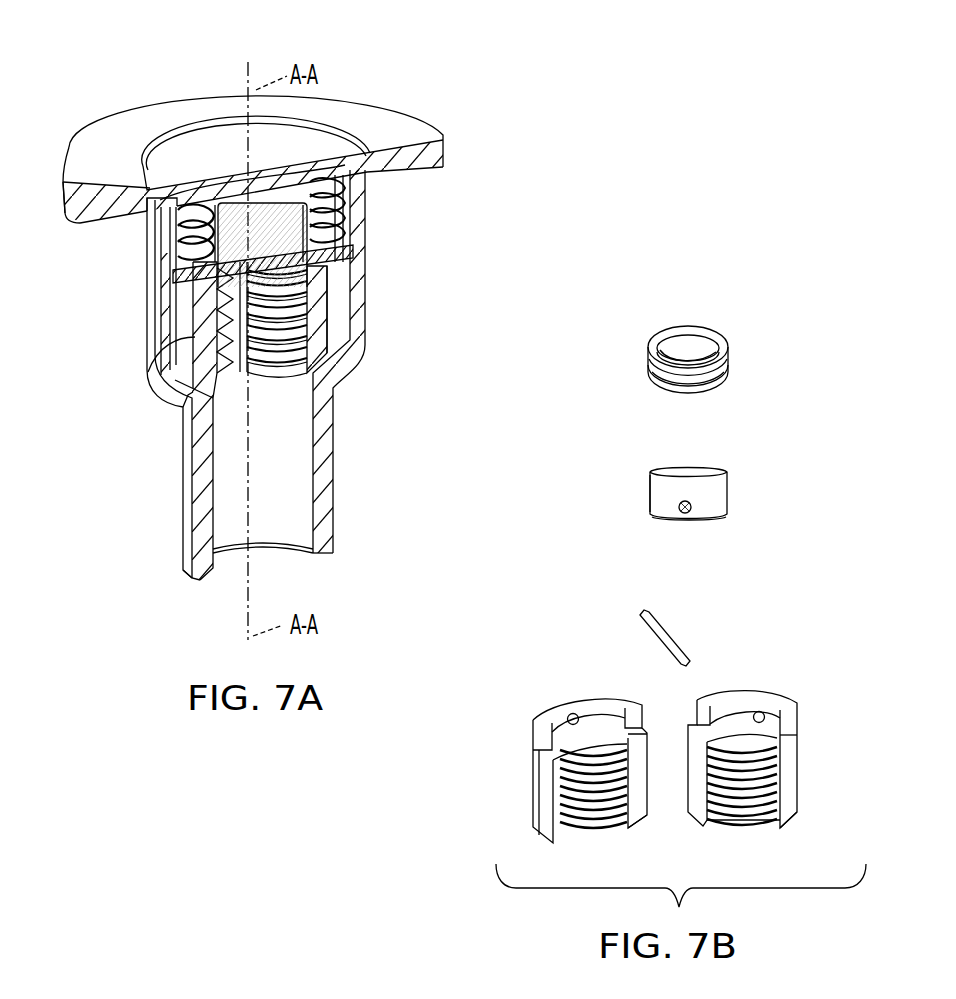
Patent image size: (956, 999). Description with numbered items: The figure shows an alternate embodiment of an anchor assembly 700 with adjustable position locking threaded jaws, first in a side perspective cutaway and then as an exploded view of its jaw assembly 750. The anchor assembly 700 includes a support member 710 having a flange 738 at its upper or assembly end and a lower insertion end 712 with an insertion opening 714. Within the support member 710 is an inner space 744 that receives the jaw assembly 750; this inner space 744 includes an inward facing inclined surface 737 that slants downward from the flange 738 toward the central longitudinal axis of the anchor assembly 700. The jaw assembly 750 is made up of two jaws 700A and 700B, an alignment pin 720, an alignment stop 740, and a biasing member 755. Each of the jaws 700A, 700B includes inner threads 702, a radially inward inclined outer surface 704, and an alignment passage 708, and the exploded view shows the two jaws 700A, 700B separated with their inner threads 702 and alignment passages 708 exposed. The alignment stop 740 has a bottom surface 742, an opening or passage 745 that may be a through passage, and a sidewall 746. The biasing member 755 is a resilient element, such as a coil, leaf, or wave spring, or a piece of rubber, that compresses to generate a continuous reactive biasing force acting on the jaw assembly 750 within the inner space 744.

In FIG. 7A, the anchor assembly 700 is at (372, 93).
In FIG. 7A, the support member 710 is at (413, 122).
In FIG. 7A, the flange 738 is at (63, 180).
In FIG. 7A, the jaw assembly 750 is at (340, 210).
In FIG. 7A, the alignment pin 720 is at (323, 256).
In FIG. 7B, the alignment pin 720 is at (678, 633).
In FIG. 7A, the inner space 744 is at (340, 287).
In FIG. 7A, the jaw 700B is at (323, 320).
In FIG. 7B, the jaw 700B is at (700, 755).
In FIG. 7A, the jaw 700A is at (193, 338).
In FIG. 7B, the jaw 700A is at (545, 805).
In FIG. 7A, the biasing member 755 is at (187, 224).
In FIG. 7B, the biasing member 755 is at (738, 350).
In FIG. 7A, the alignment stop 740 is at (237, 247).
In FIG. 7B, the alignment stop 740 is at (740, 490).
In FIG. 7A, the inclined surface 737 is at (188, 388).
In FIG. 7A, the insertion opening 714 is at (265, 517).
In FIG. 7A, the insertion end 712 is at (197, 578).
In FIG. 7B, the sidewall 746 is at (650, 487).
In FIG. 7B, the passage 745 is at (684, 514).
In FIG. 7B, the bottom surface 742 is at (718, 521).
In FIG. 7B, the alignment passage 708 is at (574, 713).
In FIG. 7B, the inner threads 702 is at (607, 798).
In FIG. 7B, the inclined outer surface 704 is at (645, 826).